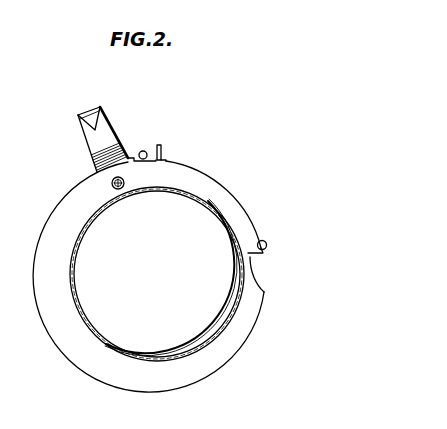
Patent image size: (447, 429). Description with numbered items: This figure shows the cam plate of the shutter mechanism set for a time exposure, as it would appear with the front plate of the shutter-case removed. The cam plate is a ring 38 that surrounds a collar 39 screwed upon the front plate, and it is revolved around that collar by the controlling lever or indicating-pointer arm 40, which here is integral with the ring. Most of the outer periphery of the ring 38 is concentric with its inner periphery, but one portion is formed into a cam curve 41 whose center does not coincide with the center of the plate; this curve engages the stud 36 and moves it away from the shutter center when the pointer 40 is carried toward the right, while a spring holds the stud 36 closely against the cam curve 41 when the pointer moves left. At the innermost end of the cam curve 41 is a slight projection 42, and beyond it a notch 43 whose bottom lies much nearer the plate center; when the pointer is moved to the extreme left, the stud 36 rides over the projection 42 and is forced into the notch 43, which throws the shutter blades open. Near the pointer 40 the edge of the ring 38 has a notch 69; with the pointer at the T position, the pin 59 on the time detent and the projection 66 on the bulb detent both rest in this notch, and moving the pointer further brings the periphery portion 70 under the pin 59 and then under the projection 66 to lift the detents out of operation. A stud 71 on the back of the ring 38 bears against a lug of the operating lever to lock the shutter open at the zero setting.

The stud 36 is at (267, 244).
The ring 38 is at (72, 345).
The collar 39 is at (83, 323).
The controlling lever or indicating-pointer arm 40 is at (96, 143).
The cam curve 41 is at (243, 198).
The projection 42 is at (266, 253).
The notch 43 is at (272, 265).
The pin 59 is at (143, 151).
The projection 66 is at (161, 147).
The notch 69 is at (148, 163).
The periphery portion 70 is at (127, 148).
The stud 71 is at (119, 190).